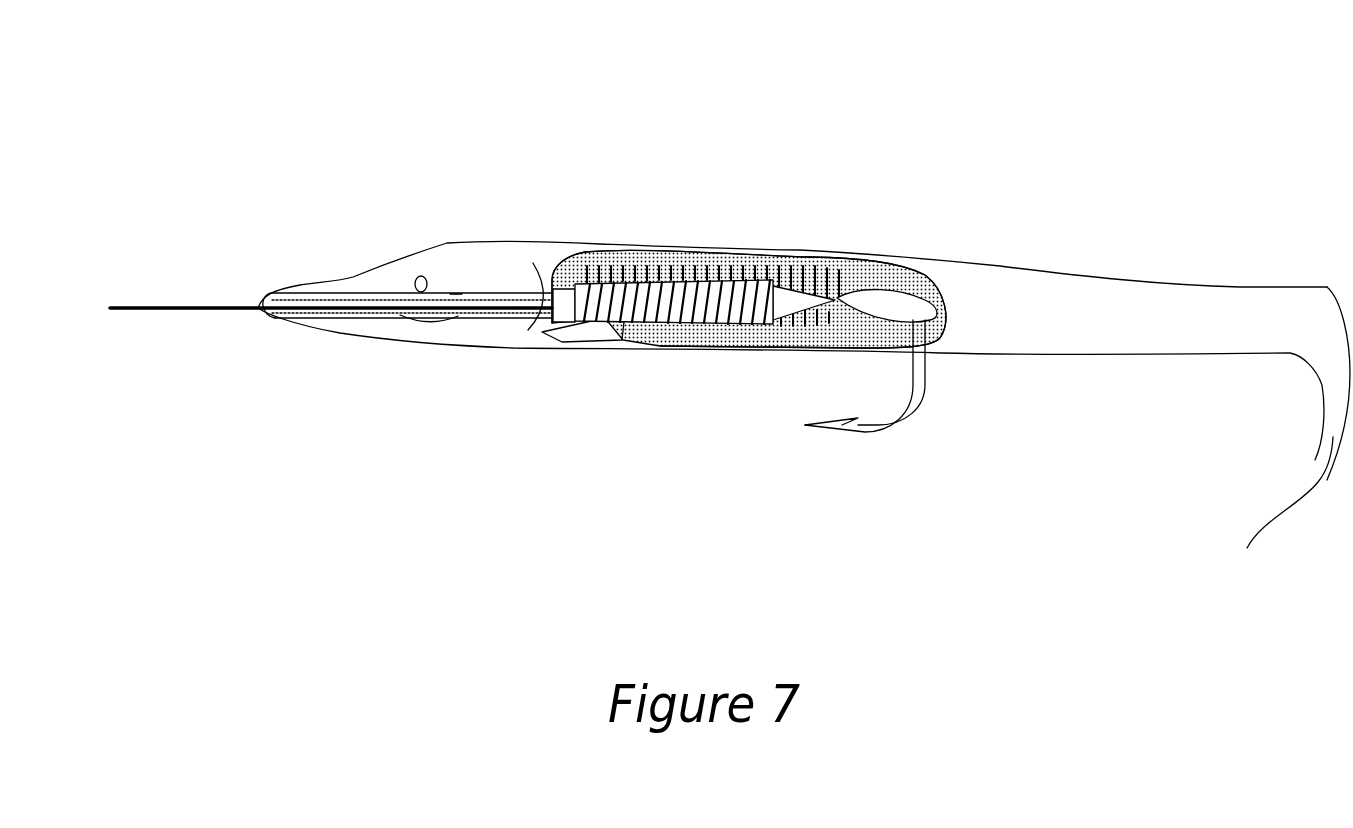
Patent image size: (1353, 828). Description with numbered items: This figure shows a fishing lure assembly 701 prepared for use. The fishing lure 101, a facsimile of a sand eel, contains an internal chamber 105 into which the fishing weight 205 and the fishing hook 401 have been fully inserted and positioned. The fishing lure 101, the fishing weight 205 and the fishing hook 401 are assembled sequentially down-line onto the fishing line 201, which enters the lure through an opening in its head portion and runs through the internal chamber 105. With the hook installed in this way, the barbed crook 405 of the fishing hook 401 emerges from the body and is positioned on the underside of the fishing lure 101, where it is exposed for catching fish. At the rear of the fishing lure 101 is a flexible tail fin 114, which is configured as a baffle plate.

The fishing lure assembly 701 is at (730, 318).
The fishing lure 101 is at (583, 240).
The internal chamber 105 is at (691, 280).
The fishing line 201 is at (210, 306).
The fishing weight 205 is at (684, 300).
The fishing hook 401 is at (925, 443).
The barbed crook 405 is at (918, 388).
The flexible tail fin 114 is at (1286, 434).